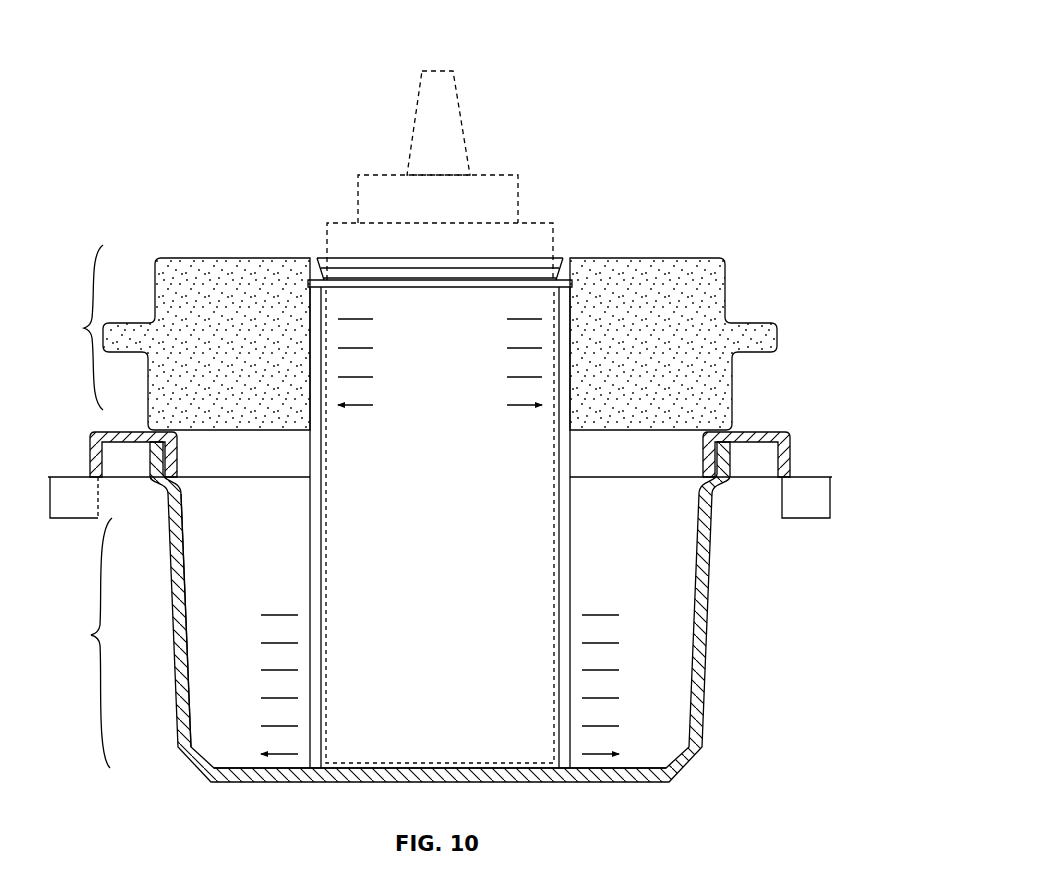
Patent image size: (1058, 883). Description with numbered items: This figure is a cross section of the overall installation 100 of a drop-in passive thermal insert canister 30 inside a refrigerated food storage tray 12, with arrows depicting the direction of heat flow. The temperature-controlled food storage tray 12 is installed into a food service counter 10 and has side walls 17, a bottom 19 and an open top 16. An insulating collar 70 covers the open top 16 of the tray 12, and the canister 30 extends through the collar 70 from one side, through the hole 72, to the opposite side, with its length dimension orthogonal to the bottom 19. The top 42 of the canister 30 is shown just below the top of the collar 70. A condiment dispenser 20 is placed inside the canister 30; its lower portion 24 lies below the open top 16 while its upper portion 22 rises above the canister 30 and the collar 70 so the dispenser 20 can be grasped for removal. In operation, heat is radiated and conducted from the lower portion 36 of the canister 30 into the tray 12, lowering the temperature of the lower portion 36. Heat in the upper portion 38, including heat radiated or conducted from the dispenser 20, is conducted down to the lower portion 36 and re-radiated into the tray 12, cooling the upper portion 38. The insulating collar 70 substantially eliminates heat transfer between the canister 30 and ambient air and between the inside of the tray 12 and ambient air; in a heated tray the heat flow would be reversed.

The cooking system 100 is at (678, 31).
The food service counter 10 is at (73, 477).
The food storage tray 12 is at (709, 558).
The open top 16 is at (684, 448).
The side walls 17 is at (184, 562).
The bottom 19 is at (226, 768).
The condiment dispenser 20 is at (518, 197).
The upper portion 22 is at (77, 327).
The lower portion 24 is at (83, 643).
The canister 30 is at (312, 522).
The lower portion of the canister 36 is at (440, 684).
The upper portion of the canister 38 is at (440, 359).
The top of the canister 42 is at (566, 278).
The insulating collar 70 is at (673, 258).
The hole 72 is at (322, 258).